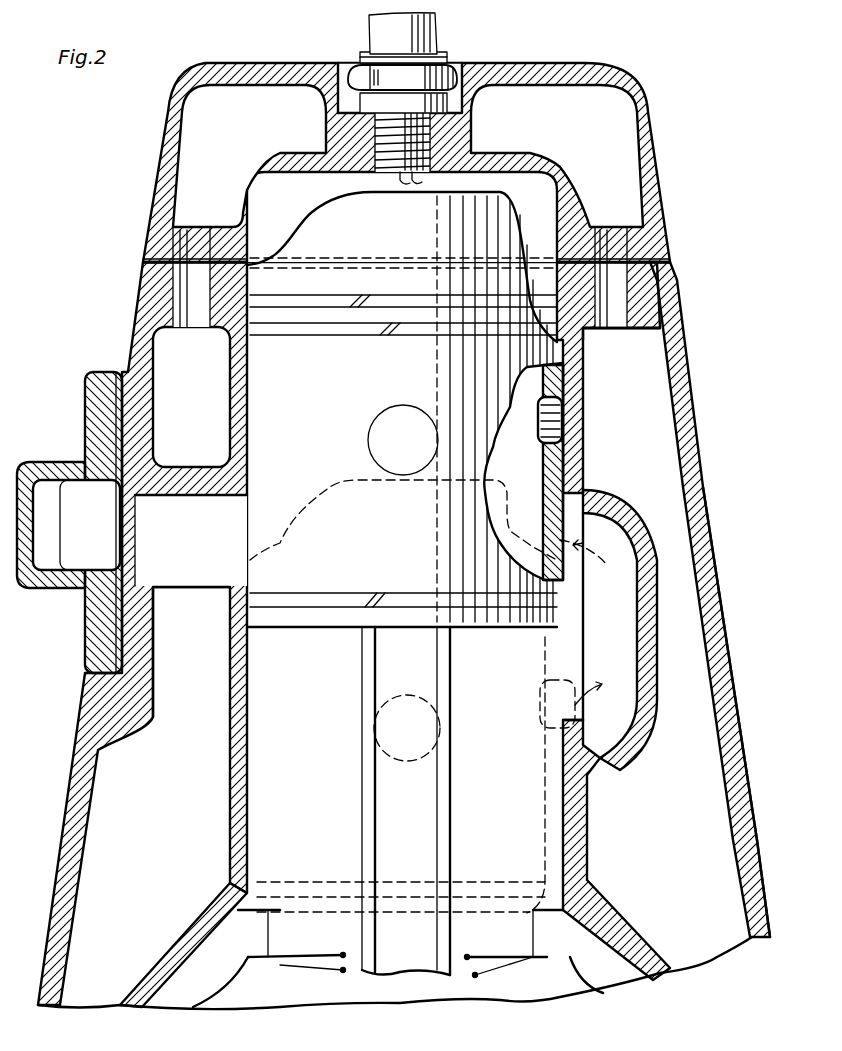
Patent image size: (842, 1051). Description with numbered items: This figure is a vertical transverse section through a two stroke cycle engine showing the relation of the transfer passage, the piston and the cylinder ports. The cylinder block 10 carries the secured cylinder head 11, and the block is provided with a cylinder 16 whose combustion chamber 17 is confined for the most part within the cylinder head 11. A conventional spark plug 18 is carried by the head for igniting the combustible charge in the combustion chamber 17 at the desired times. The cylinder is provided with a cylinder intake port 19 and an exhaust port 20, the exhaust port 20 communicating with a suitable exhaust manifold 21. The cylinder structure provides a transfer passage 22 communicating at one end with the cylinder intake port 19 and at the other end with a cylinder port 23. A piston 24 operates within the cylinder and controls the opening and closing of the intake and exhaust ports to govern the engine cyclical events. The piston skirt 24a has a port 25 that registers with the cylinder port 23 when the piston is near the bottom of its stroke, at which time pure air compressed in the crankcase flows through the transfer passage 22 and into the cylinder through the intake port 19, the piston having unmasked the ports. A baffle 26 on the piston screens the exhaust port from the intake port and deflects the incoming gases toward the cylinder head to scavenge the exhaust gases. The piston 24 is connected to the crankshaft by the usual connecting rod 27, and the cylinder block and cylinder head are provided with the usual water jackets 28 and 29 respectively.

The cylinder block 10 is at (688, 396).
The cylinder head 11 is at (654, 150).
The cylinder 16 is at (560, 352).
The combustion chamber 17 is at (560, 200).
The spark plug 18 is at (370, 66).
The cylinder intake port 19 is at (610, 500).
The exhaust port 20 is at (178, 545).
The exhaust manifold 21 is at (40, 462).
The transfer passage 22 is at (627, 592).
The cylinder port 23 is at (588, 735).
The piston 24 is at (318, 588).
The piston skirt 24a is at (562, 460).
The piston skirt port 25 is at (550, 420).
The baffle 26 is at (505, 205).
The connecting rod 27 is at (428, 813).
The water jacket 28 is at (688, 625).
The water jacket 29 is at (192, 137).